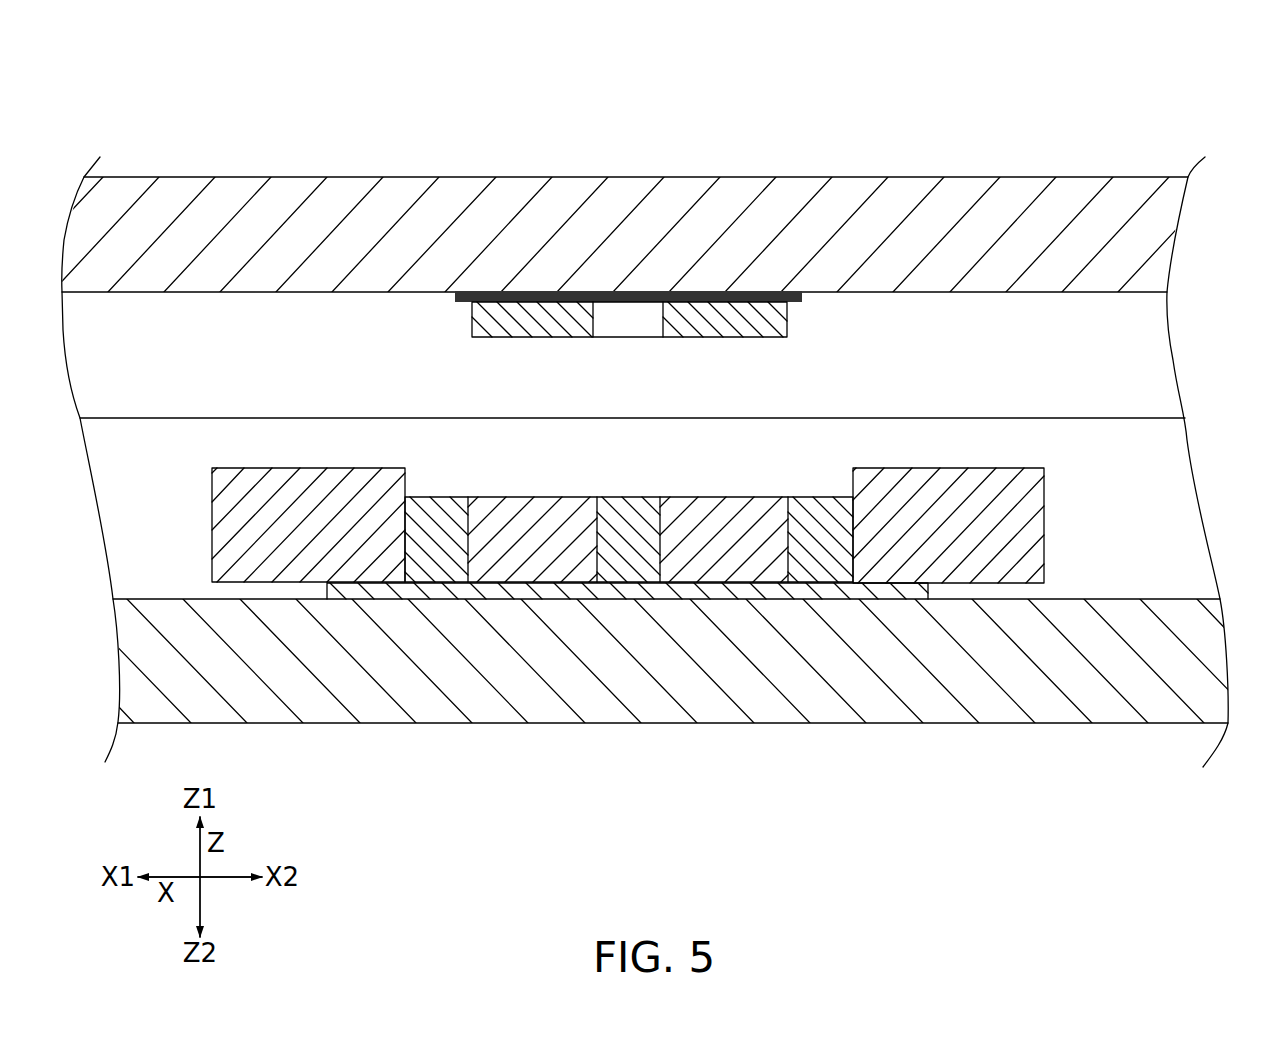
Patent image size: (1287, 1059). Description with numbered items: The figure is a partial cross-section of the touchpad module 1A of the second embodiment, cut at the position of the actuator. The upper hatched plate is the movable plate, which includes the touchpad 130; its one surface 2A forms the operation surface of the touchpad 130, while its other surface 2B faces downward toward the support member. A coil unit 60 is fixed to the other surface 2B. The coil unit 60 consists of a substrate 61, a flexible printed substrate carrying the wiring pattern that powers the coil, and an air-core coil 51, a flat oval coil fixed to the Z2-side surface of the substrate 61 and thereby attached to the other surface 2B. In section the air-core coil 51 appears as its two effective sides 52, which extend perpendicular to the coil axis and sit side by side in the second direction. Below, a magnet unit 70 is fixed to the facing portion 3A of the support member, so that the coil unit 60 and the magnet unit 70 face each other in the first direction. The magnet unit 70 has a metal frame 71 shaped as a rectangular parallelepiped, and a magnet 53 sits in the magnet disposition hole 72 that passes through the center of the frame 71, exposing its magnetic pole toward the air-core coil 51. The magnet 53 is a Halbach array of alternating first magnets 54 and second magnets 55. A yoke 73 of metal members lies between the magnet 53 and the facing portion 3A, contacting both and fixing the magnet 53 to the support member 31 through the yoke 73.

The touchpad module 1A is at (157, 141).
The touchpad 130 is at (620, 185).
The one surface 2A is at (884, 176).
The other surface 2B is at (1030, 295).
The coil unit 60 is at (350, 121).
The air-core coil 51 is at (472, 328).
The effective sides 52 is at (710, 313).
The substrate 61 is at (455, 301).
The second plate (base 3) 31 is at (689, 673).
The facing portion 3A is at (1165, 598).
The magnet unit 70 is at (617, 811).
The magnet 53 is at (442, 774).
The first magnets 54 is at (728, 572).
The second magnets 55 is at (820, 572).
The frame 71 is at (1045, 556).
The magnet disposition hole 72 is at (406, 552).
The yoke 73 is at (930, 593).